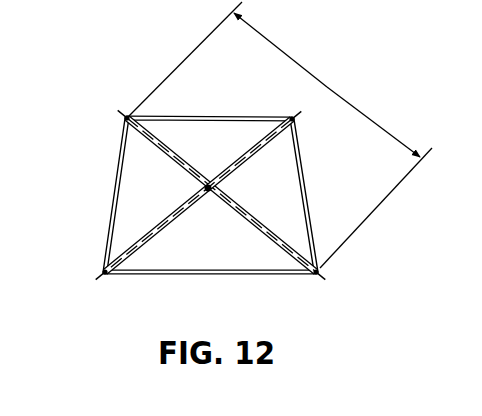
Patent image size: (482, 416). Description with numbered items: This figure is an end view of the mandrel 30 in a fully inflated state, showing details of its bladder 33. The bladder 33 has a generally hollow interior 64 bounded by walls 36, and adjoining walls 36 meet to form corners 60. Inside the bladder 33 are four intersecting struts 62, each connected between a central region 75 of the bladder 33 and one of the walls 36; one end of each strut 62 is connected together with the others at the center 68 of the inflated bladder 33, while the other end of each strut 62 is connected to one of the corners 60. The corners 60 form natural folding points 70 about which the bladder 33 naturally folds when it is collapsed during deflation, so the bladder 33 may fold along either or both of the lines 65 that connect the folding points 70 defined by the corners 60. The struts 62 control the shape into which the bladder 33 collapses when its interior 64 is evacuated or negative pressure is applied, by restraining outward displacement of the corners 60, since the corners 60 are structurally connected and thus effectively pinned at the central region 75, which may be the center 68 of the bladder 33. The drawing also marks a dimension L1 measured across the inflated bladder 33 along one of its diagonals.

The mandrel 30 is at (207, 188).
The bladder 33 is at (196, 195).
The wall 36 is at (115, 183).
The corner 60 is at (118, 122).
The strut 62 is at (222, 216).
The interior of the bladder 64 is at (130, 222).
The folding line 65 is at (265, 231).
The center of the bladder 68 is at (204, 184).
The natural folding point 70 is at (126, 116).
The central region 75 is at (226, 150).
The diagonal length L1 is at (279, 135).